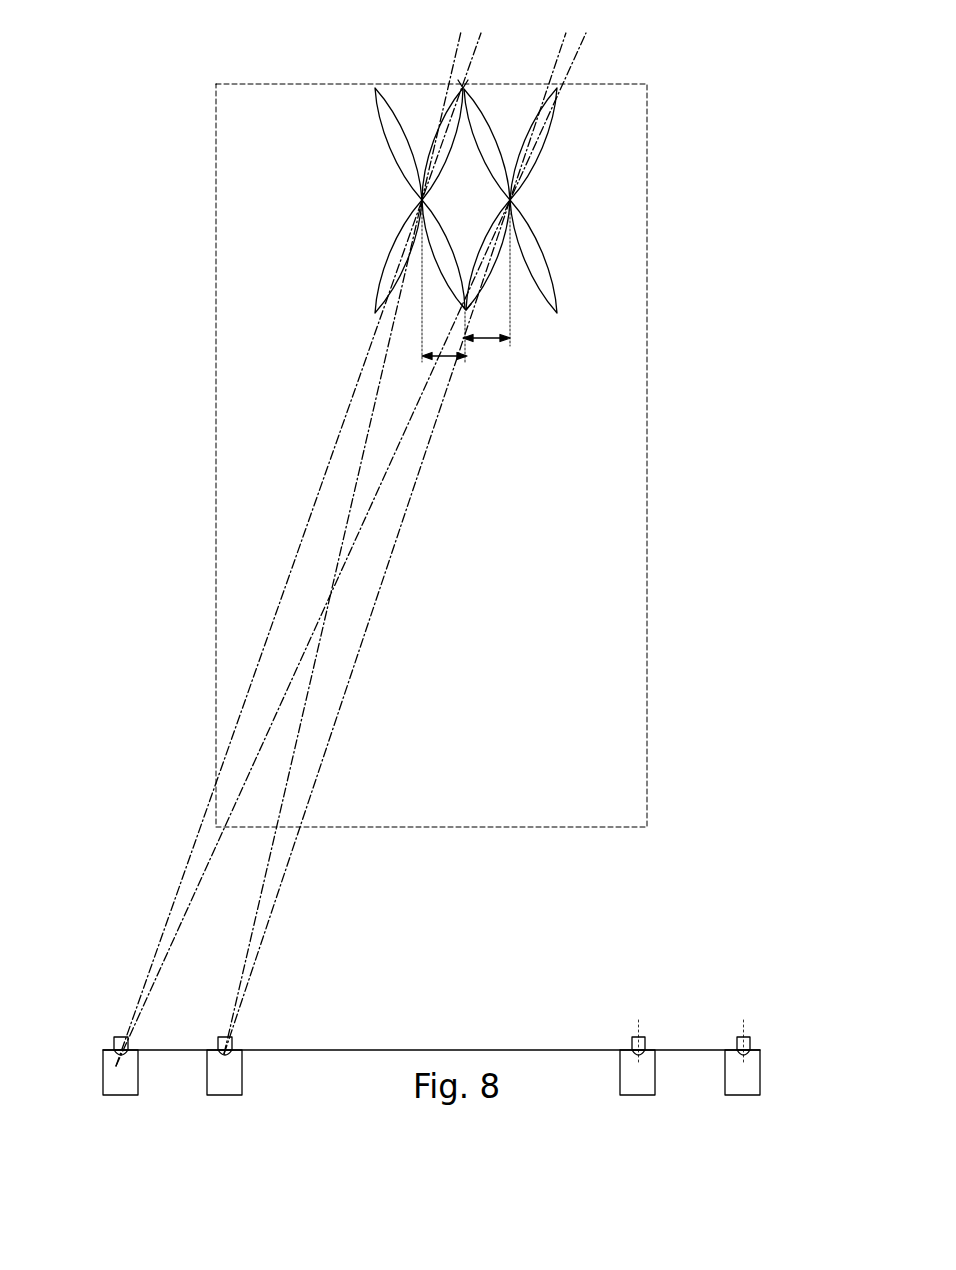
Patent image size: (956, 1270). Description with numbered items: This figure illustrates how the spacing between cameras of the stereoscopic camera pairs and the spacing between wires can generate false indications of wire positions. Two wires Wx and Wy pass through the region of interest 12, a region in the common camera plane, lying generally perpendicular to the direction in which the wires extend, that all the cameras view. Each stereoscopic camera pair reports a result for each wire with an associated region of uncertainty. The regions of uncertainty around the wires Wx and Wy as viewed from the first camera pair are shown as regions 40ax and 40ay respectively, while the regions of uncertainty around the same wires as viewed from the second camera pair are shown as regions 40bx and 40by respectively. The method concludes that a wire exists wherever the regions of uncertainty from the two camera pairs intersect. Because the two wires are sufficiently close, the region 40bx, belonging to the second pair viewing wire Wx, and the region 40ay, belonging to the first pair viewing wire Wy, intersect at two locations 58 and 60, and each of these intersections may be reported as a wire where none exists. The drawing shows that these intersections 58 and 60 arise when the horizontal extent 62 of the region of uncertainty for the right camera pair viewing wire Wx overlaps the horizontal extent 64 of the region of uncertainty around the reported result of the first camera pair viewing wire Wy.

The region of interest 12 is at (652, 762).
The region of uncertainty 40ax is at (373, 288).
The region of uncertainty 40bx is at (385, 138).
The region of uncertainty 40ay is at (545, 140).
The region of uncertainty 40by is at (553, 282).
The wire Wx is at (306, 234).
The wire Wy is at (602, 203).
The intersection 58 is at (466, 310).
The intersection 60 is at (463, 88).
The horizontal extent 62 is at (447, 356).
The horizontal extent 64 is at (487, 340).